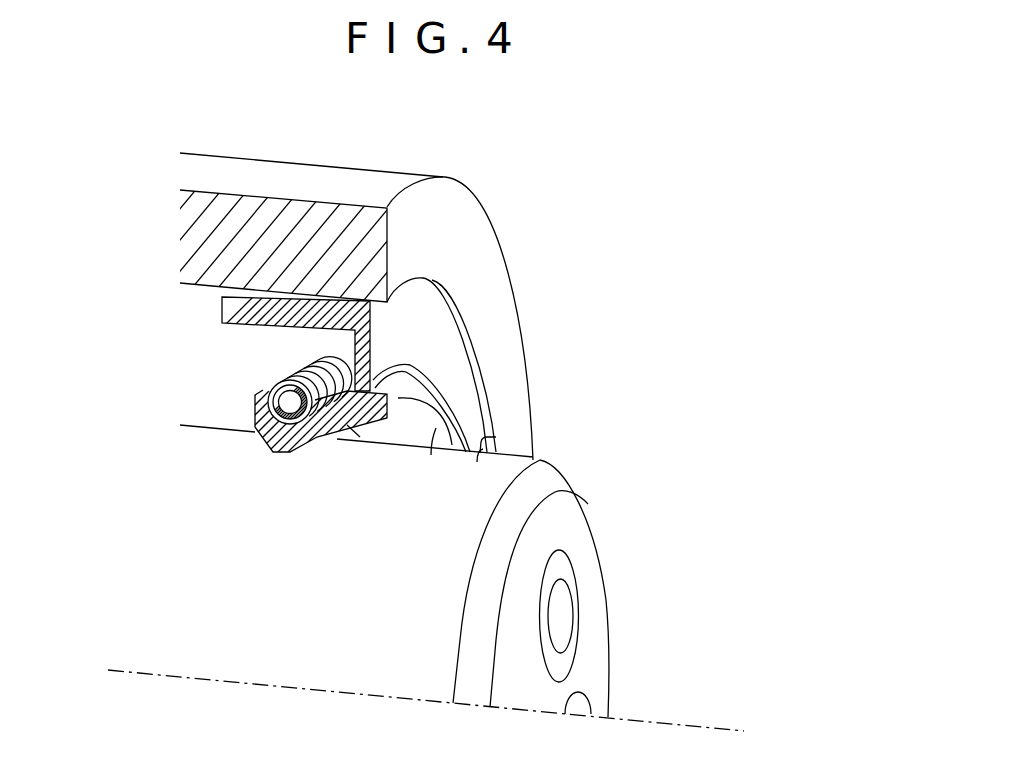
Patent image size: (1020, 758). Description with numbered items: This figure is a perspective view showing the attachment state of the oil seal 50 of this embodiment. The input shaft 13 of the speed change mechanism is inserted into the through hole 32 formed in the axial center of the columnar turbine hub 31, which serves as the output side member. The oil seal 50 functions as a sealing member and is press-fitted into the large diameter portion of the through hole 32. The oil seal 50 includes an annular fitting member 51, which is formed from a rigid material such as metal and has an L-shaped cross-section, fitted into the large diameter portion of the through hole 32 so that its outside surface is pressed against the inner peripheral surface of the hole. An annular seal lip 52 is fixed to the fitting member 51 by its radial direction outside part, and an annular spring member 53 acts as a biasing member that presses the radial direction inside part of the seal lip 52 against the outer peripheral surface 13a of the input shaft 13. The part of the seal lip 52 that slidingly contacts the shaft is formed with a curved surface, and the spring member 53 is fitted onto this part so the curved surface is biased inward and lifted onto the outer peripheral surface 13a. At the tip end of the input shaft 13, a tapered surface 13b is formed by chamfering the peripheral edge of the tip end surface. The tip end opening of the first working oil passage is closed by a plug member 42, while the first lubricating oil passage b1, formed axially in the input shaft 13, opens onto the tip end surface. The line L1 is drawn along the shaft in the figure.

The turbine hub 31 is at (470, 213).
The through hole 32 is at (201, 285).
The oil seal 50 is at (477, 307).
The fitting member 51 is at (222, 313).
The seal lip 52 is at (288, 438).
The spring member 53 is at (262, 391).
The input shaft 13 is at (434, 445).
The outer peripheral surface 13a is at (496, 437).
The tapered surface 13b is at (555, 475).
The plug member 42 is at (560, 603).
The first lubricating oil passage b1 is at (587, 703).
The axis line L1 is at (683, 722).